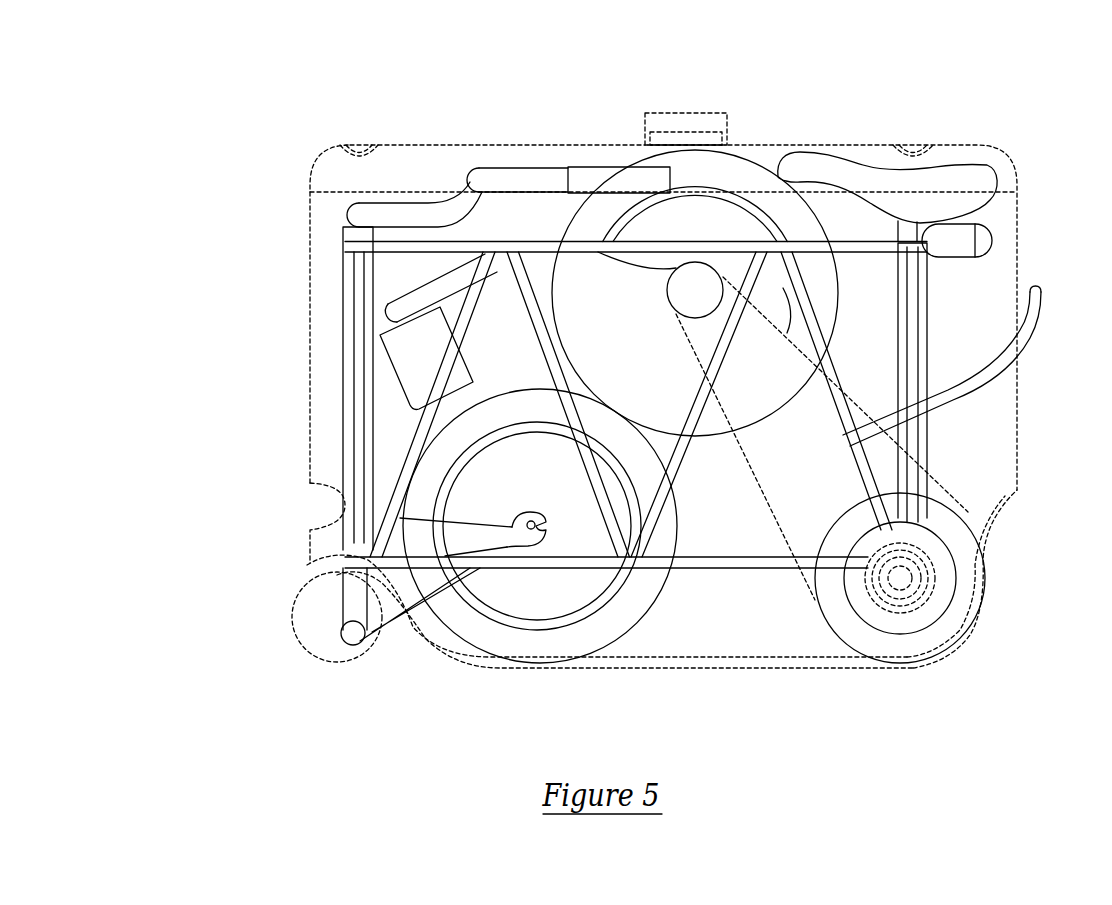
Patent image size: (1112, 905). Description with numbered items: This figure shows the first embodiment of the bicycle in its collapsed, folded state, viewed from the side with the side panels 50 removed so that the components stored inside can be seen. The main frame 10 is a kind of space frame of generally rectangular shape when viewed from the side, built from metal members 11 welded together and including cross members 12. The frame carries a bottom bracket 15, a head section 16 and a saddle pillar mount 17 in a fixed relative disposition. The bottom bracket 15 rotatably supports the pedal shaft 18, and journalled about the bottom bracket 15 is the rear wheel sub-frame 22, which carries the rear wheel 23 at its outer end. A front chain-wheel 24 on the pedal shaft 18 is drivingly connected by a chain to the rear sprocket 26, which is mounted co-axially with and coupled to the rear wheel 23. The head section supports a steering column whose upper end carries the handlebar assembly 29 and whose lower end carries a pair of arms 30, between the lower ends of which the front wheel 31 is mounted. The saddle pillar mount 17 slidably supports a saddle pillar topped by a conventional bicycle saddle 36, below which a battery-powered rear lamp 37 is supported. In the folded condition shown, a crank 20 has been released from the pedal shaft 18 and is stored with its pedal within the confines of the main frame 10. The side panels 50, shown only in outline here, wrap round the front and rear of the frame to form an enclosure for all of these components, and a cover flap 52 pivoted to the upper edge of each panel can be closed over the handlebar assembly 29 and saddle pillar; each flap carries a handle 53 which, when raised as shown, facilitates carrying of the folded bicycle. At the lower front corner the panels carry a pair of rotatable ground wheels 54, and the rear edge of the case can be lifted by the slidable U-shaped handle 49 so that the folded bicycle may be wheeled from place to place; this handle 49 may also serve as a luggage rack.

The main frame 10 is at (356, 268).
The members 11 is at (412, 432).
The cross members 12 is at (377, 247).
The bottom bracket 15 is at (934, 583).
The head section 16 is at (340, 312).
The saddle pillar mount 17 is at (928, 320).
The pedal shaft 18 is at (900, 590).
The crank 20 is at (452, 283).
The rear wheel sub-frame 22 is at (768, 383).
The rear wheel 23 is at (718, 213).
The front chain-wheel 24 is at (840, 633).
The rear sprocket 26 is at (688, 284).
The handlebar assembly 29 is at (428, 207).
The arms 30 is at (421, 580).
The front wheel 31 is at (500, 485).
The bicycle saddle 36 is at (984, 178).
The rear lamp 37 is at (958, 242).
The handle 49 is at (977, 385).
The side panels 50 is at (757, 597).
The cover flap 52 is at (520, 158).
The handle 53 is at (660, 118).
The ground wheels 54 is at (323, 592).